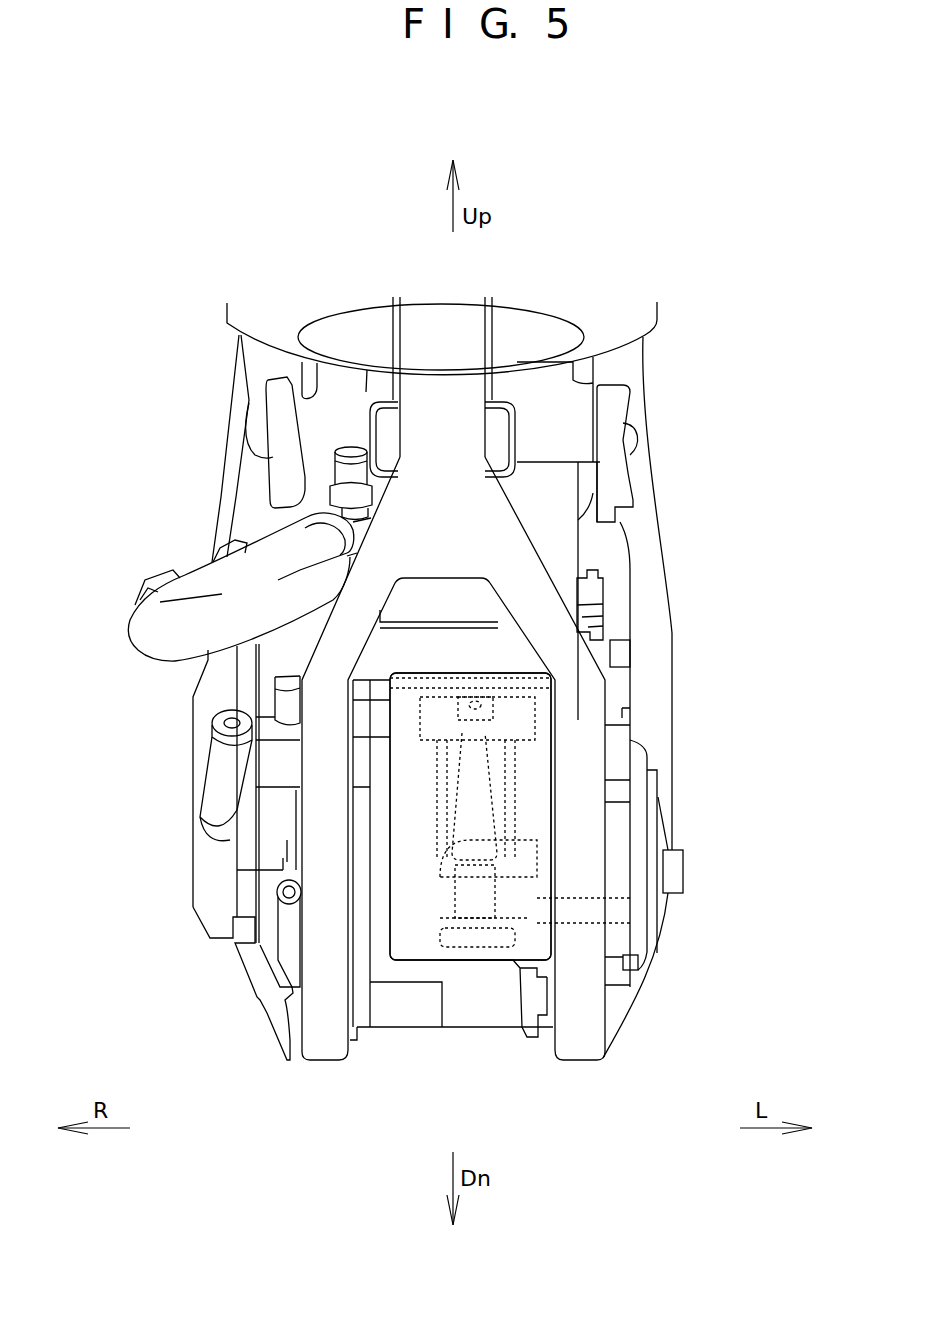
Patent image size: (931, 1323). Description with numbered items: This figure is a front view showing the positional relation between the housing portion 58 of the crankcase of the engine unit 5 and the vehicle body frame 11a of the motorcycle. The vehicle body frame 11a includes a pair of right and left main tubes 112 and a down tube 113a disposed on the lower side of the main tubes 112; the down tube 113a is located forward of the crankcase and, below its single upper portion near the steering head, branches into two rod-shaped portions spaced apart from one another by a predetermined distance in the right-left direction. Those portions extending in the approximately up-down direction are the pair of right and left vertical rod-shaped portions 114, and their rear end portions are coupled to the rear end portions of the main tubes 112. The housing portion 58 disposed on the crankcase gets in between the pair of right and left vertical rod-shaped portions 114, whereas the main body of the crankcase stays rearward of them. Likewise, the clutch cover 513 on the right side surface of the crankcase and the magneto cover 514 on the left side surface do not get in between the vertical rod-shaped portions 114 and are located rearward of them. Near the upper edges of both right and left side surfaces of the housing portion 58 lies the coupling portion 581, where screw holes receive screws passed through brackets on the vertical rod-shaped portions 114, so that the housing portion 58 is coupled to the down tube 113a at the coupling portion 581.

The engine unit 5 is at (418, 1050).
The vehicle body frame 11a is at (459, 654).
The main tubes 112 is at (228, 457).
The down tube 113a is at (418, 380).
The vertical rod-shaped portions 114 is at (317, 1010).
The clutch cover 513 is at (193, 872).
The magneto cover 514 is at (668, 915).
The housing portion 58 is at (503, 917).
The coupling portion 581 is at (373, 722).